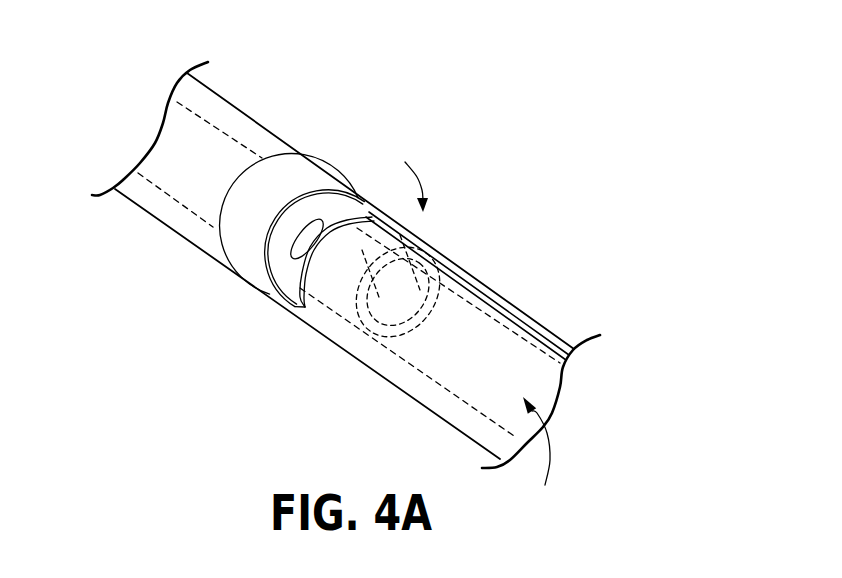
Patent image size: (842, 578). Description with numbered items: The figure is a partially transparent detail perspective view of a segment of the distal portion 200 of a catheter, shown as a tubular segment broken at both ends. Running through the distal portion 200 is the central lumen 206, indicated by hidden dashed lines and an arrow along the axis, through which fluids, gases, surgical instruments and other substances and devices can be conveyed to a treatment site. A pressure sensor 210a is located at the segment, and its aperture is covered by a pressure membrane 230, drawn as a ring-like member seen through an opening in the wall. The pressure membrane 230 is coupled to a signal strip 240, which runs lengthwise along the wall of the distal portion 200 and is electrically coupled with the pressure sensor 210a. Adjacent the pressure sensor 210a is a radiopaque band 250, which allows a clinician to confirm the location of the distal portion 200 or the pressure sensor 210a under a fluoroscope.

The distal portion 200 is at (248, 116).
The radiopaque band 250 is at (277, 187).
The pressure membrane 230 is at (297, 243).
The signal strip 240 is at (523, 307).
The pressure sensor 210a is at (390, 180).
The central lumen 206 is at (536, 456).